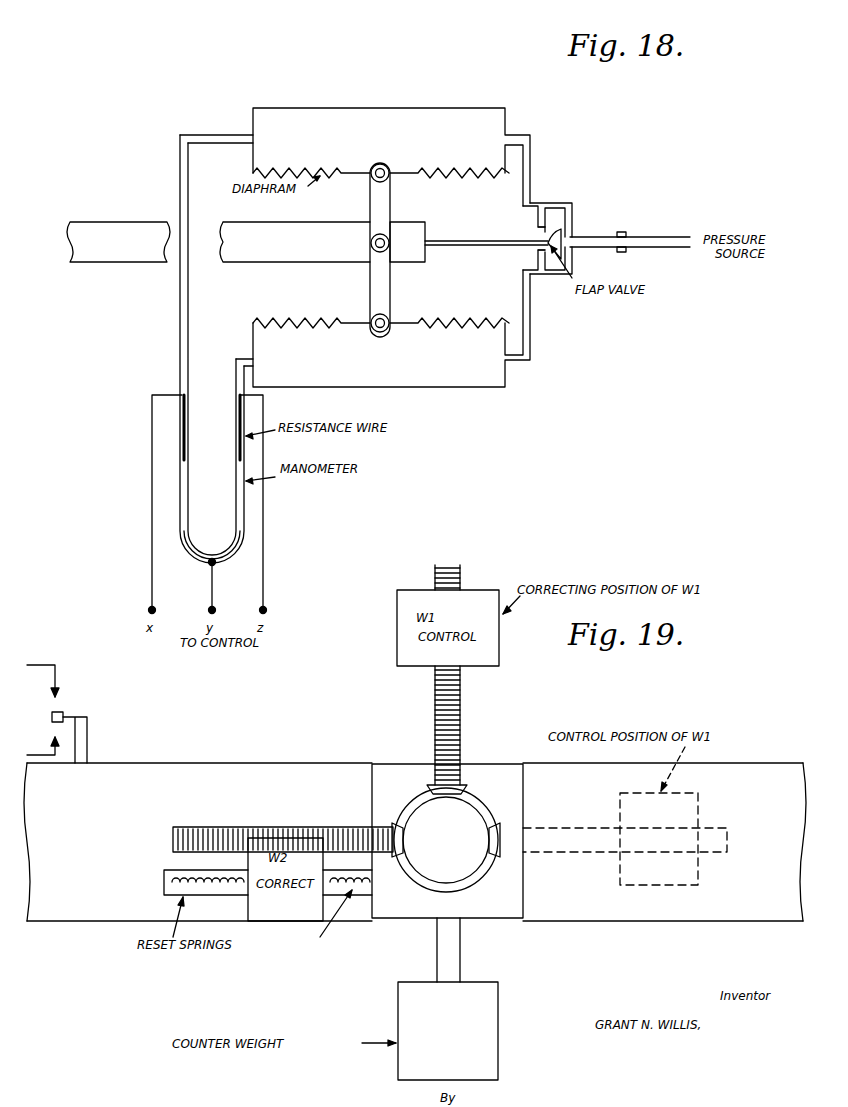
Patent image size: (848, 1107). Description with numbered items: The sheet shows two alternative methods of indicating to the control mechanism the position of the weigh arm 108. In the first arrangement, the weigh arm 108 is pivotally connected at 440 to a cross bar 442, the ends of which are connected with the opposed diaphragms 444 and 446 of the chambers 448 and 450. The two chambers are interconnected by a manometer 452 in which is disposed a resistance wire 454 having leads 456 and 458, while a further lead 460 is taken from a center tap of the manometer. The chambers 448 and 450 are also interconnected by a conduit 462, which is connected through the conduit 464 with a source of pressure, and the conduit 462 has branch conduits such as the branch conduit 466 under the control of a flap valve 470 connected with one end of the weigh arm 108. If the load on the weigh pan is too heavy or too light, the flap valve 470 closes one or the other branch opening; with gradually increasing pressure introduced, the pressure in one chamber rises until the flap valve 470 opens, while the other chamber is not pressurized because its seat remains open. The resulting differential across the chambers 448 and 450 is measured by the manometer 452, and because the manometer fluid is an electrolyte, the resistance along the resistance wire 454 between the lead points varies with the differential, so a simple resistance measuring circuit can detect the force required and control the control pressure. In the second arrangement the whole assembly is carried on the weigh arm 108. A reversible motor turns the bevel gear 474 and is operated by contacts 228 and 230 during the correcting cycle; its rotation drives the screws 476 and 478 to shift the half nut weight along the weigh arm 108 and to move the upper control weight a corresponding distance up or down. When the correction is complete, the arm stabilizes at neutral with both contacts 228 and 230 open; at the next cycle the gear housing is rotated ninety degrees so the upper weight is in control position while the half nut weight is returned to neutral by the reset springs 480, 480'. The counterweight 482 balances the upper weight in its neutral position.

In FIG. 18, the weigh arm 108 is at (276, 258).
In FIG. 19, the weigh arm 108 is at (415, 842).
In FIG. 18, the pivot 440 is at (370, 244).
In FIG. 18, the cross bar 442 is at (392, 318).
In FIG. 18, the diaphragm 444 is at (461, 187).
In FIG. 18, the diaphragm 446 is at (462, 310).
In FIG. 18, the chamber 448 is at (488, 115).
In FIG. 18, the chamber 450 is at (485, 373).
In FIG. 18, the manometer 452 is at (244, 505).
In FIG. 18, the resistance wire 454 is at (237, 528).
In FIG. 18, the lead 456 is at (152, 541).
In FIG. 18, the lead 458 is at (263, 552).
In FIG. 18, the lead 460 is at (212, 578).
In FIG. 18, the conduit 462 is at (556, 274).
In FIG. 18, the conduit 464 is at (658, 236).
In FIG. 18, the branch conduit 466 is at (538, 263).
In FIG. 18, the flap valve 470 is at (553, 236).
In FIG. 18, the screw 478 is at (620, 250).
In FIG. 19, the contact 228 is at (62, 695).
In FIG. 19, the contact 230 is at (60, 738).
In FIG. 19, the bevel gear 474 is at (482, 804).
In FIG. 19, the screw 476 is at (355, 812).
In FIG. 19, the reset spring 480 is at (182, 869).
In FIG. 19, the reset spring 480' is at (356, 912).
In FIG. 19, the counterweight 482 is at (418, 1065).